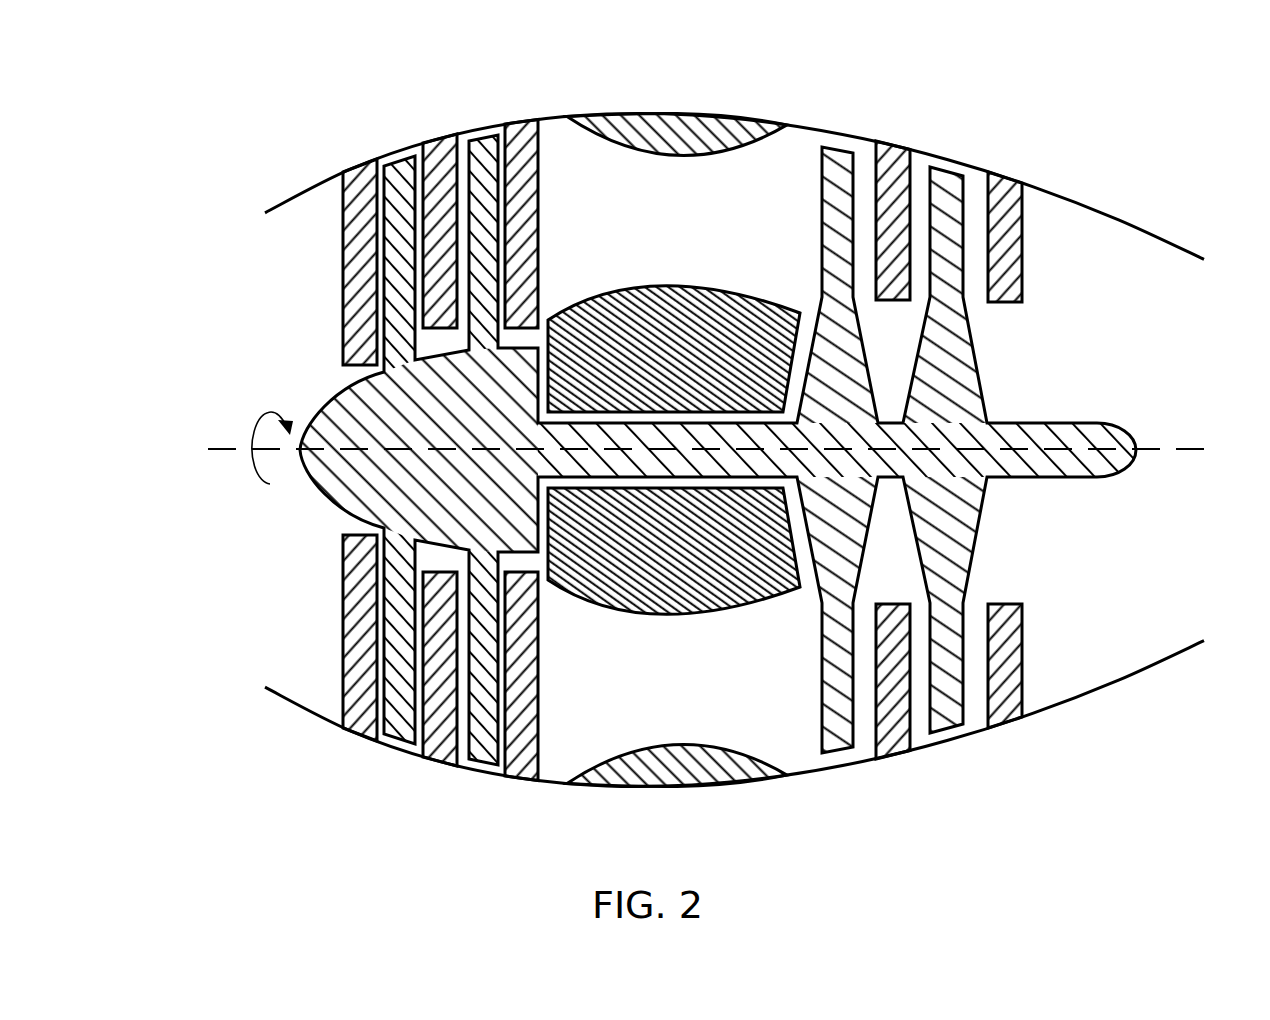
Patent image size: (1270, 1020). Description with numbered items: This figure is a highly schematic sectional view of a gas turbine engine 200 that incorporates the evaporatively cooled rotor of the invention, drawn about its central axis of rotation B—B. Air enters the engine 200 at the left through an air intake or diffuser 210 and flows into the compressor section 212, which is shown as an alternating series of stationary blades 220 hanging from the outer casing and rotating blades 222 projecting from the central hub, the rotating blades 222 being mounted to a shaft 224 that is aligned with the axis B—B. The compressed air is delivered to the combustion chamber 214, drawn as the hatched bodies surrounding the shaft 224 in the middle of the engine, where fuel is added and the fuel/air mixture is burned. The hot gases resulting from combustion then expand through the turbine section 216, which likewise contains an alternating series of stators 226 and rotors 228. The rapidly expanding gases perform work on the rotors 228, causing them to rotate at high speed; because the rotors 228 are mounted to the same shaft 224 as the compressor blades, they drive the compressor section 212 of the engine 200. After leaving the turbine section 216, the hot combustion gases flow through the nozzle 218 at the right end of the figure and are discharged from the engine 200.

The gas turbine engine 200 is at (262, 157).
The air intake or diffuser 210 is at (313, 333).
The compressor section 212 is at (432, 125).
The combustion chamber 214 is at (702, 215).
The turbine section 216 is at (912, 128).
The nozzle 218 is at (1242, 382).
The stationary blades 220 is at (343, 690).
The rotating blades 222 is at (385, 737).
The shaft 224 is at (620, 478).
The stators 226 is at (913, 713).
The rotors 228 is at (965, 713).